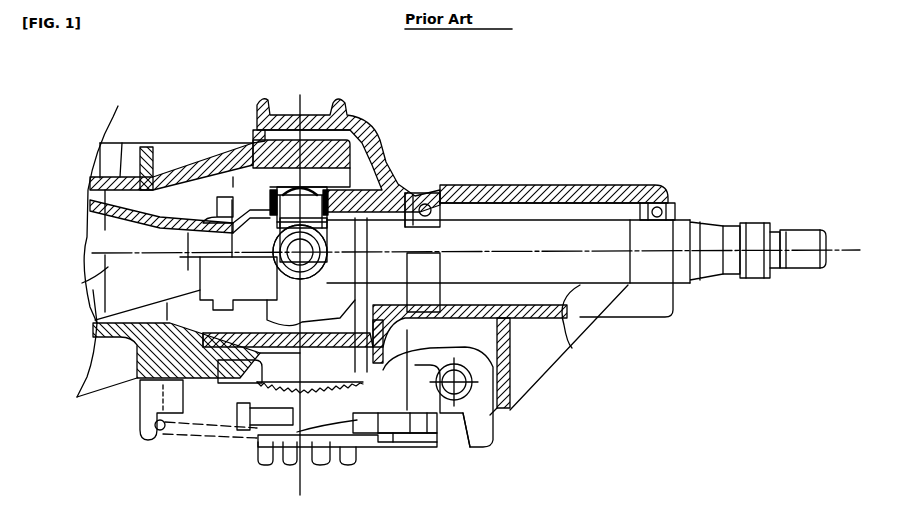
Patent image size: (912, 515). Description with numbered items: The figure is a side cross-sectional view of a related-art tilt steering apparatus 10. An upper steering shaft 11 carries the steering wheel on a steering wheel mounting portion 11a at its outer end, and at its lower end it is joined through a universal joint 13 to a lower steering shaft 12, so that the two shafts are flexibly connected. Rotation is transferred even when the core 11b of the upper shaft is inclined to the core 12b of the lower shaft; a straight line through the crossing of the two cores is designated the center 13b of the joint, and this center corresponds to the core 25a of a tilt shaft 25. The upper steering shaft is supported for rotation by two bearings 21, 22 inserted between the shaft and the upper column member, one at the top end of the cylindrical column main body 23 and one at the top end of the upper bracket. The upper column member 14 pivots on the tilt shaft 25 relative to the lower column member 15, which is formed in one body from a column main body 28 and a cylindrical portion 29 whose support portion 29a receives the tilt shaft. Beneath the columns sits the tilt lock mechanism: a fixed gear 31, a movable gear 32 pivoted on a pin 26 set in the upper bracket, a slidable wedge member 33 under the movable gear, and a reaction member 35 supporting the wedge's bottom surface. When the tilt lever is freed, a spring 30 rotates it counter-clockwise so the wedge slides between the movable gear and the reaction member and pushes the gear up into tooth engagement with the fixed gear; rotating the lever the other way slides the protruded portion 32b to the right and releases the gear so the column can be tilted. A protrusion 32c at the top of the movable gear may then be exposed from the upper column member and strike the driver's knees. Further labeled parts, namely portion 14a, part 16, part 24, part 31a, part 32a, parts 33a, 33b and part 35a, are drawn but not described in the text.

The steering gear (prior art) 10 is at (366, 88).
The upper steering shaft 11 is at (548, 184).
The steering wheel mounting portion 11a is at (755, 222).
The core of the upper steering shaft 11b is at (590, 256).
The lower steering shaft 12 is at (90, 215).
The core of the lower steering shaft 12b is at (82, 283).
The universal joint 13 is at (301, 193).
The center of the universal joint 13b is at (290, 260).
The upper column member 14 is at (395, 165).
The housing web 14a is at (497, 410).
The lower column member 15 is at (200, 164).
The rack guide cover 16 is at (400, 452).
The bearing 21 is at (660, 186).
The bearing 22 is at (430, 190).
The column main body 23 is at (510, 186).
The seal 24 is at (310, 111).
The tilt shaft 25 is at (286, 246).
The core of the tilt shaft 25a is at (300, 252).
The pin 26 is at (463, 367).
The column main body 28 is at (122, 143).
The cylindrical portion 29 is at (258, 148).
The support portion 29a is at (268, 352).
The spring 30 is at (205, 437).
The fixed gear 31 is at (250, 362).
The rack guide flange 31a is at (240, 399).
The movable gear 32 is at (365, 447).
The support plate portion 32a is at (288, 395).
The protruded portion 32b is at (258, 458).
The protrusion 32c is at (476, 442).
The wedge member 33 is at (418, 450).
The cover plate portion 33a is at (348, 447).
The cover plate tab 33b is at (306, 430).
The reaction member 35 is at (290, 468).
The spring end 35a is at (318, 466).